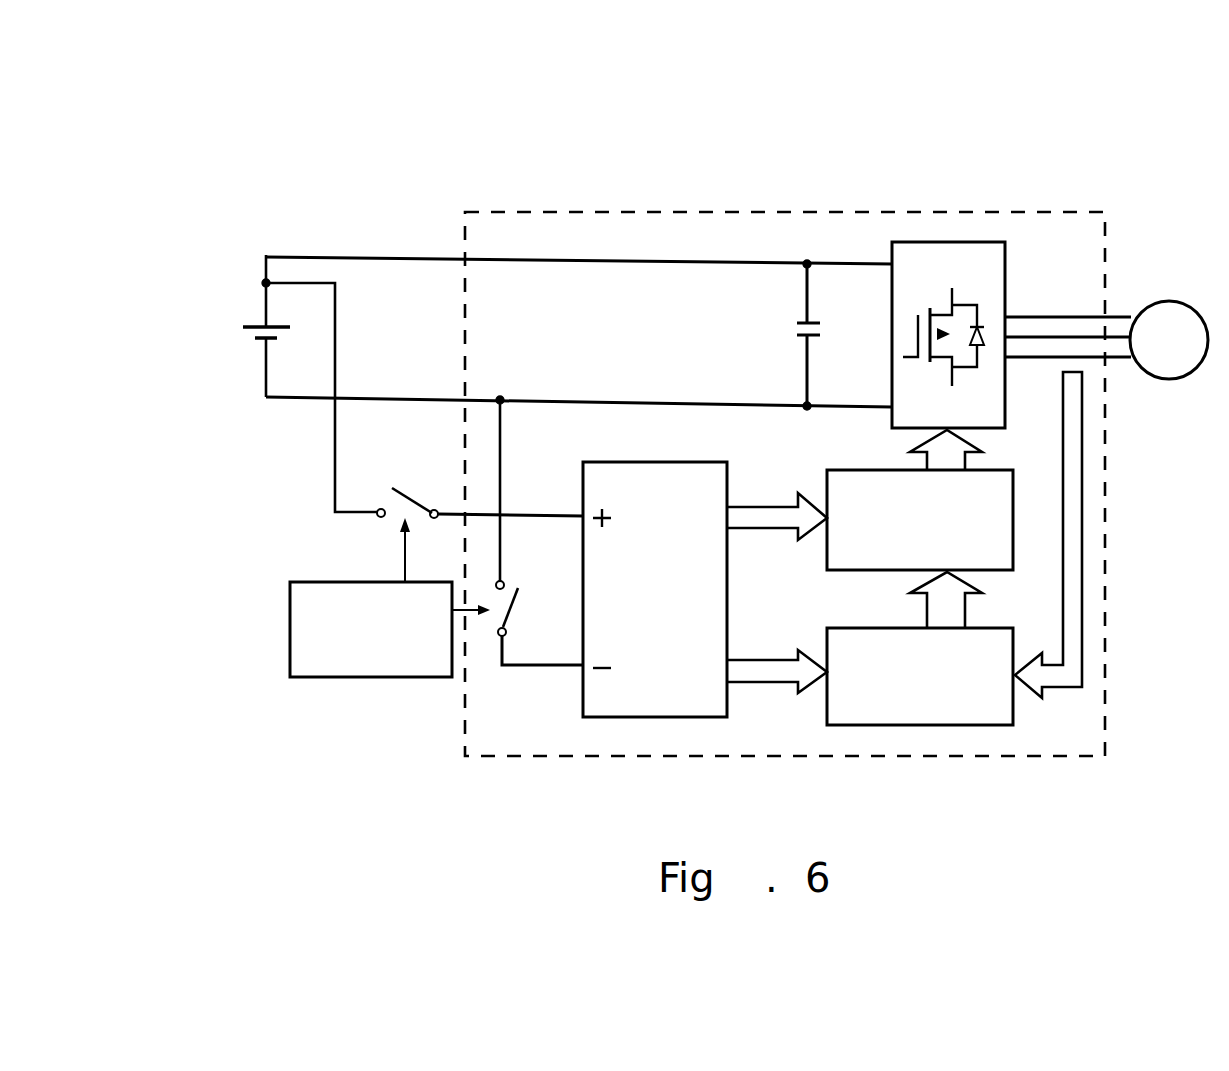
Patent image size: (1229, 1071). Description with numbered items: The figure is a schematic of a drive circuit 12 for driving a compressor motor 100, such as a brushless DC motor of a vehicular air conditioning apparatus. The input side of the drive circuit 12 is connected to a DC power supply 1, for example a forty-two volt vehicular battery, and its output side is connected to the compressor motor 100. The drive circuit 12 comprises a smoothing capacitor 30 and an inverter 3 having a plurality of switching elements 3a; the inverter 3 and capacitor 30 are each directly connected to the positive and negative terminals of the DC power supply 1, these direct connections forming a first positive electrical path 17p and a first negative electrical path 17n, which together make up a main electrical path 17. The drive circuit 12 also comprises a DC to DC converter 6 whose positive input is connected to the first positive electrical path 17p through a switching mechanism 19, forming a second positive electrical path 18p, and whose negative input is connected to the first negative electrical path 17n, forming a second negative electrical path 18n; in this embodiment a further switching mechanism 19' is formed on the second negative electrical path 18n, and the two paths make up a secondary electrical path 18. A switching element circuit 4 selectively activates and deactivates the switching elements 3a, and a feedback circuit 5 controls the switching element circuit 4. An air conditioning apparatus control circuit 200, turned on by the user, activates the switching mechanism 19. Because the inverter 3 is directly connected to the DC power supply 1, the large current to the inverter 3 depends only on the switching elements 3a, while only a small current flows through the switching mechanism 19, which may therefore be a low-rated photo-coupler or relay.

The DC power supply 1 is at (257, 323).
The inverter 3 is at (1031, 261).
The switching elements 3a is at (960, 295).
The switching element circuit 4 is at (850, 470).
The feedback circuit 5 is at (850, 627).
The DC to DC converter 6 is at (637, 462).
The drive circuit 12 is at (618, 212).
The main electrical path 17 is at (579, 332).
The first positive electrical path 17p is at (603, 265).
The first negative electrical path 17n is at (610, 400).
The secondary electrical path 18 is at (510, 575).
The second positive electrical path 18p is at (510, 554).
The second negative electrical path 18n is at (527, 673).
The switching mechanism 19 is at (288, 280).
The switching mechanism 19' is at (459, 715).
The smoothing capacitor 30 is at (813, 340).
The compressor motor 100 is at (1185, 299).
The air conditioning apparatus control circuit 200 is at (350, 678).